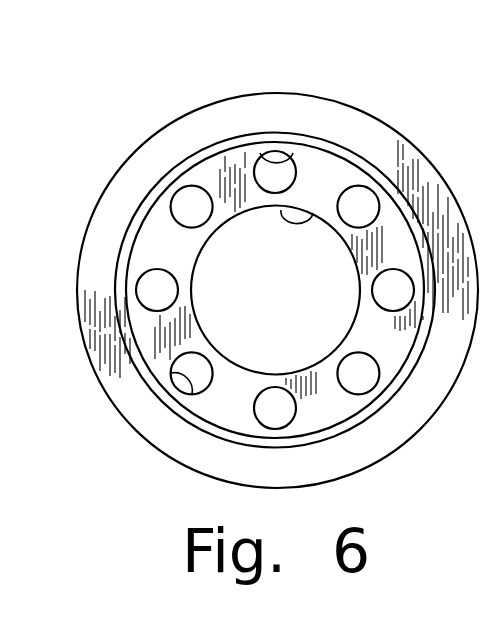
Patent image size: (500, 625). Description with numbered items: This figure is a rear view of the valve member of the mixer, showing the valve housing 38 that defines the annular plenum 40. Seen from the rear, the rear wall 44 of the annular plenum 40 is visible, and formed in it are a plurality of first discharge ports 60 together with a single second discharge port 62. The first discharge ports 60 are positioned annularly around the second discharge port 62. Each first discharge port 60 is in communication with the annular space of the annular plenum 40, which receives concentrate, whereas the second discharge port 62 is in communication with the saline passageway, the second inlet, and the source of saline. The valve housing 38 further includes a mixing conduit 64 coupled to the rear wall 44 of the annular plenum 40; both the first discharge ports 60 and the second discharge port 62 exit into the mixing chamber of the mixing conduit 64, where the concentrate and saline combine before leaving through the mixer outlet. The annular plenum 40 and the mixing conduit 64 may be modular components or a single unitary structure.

The valve housing 38 is at (349, 84).
The annular plenum 40 is at (168, 131).
The rear wall 44 is at (438, 382).
The first discharge ports 60 is at (277, 151).
The second discharge port 62 is at (313, 213).
The mixing conduit 64 is at (420, 220).